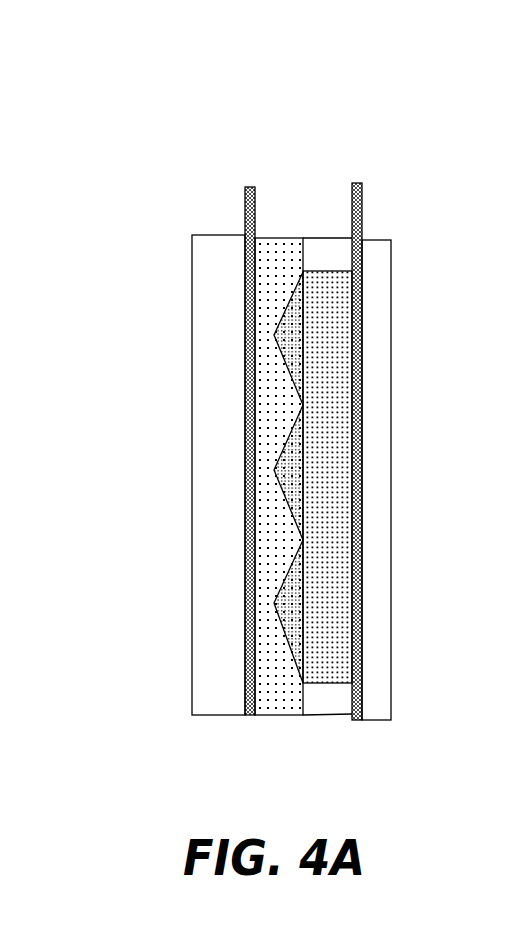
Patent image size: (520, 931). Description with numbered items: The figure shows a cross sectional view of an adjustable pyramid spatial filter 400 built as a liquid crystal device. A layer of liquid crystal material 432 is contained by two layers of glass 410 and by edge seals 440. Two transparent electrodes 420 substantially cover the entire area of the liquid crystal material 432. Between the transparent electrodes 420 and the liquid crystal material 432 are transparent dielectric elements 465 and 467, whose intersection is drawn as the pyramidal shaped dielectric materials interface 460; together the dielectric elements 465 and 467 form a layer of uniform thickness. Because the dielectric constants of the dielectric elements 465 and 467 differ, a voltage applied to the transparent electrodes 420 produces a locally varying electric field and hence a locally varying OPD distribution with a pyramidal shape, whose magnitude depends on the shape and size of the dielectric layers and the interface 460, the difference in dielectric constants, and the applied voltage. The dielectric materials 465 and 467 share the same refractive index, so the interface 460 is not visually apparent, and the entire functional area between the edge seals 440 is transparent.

The adjustable pyramid spatial filter 400 is at (330, 44).
The glass layer 410 is at (192, 690).
The transparent electrode 420 is at (357, 177).
The liquid crystal material 432 is at (335, 355).
The edge seal 440 is at (330, 716).
The pyramidal shaped dielectric materials interface 460 is at (289, 324).
The dielectric element 465 is at (275, 716).
The dielectric element 467 is at (286, 592).